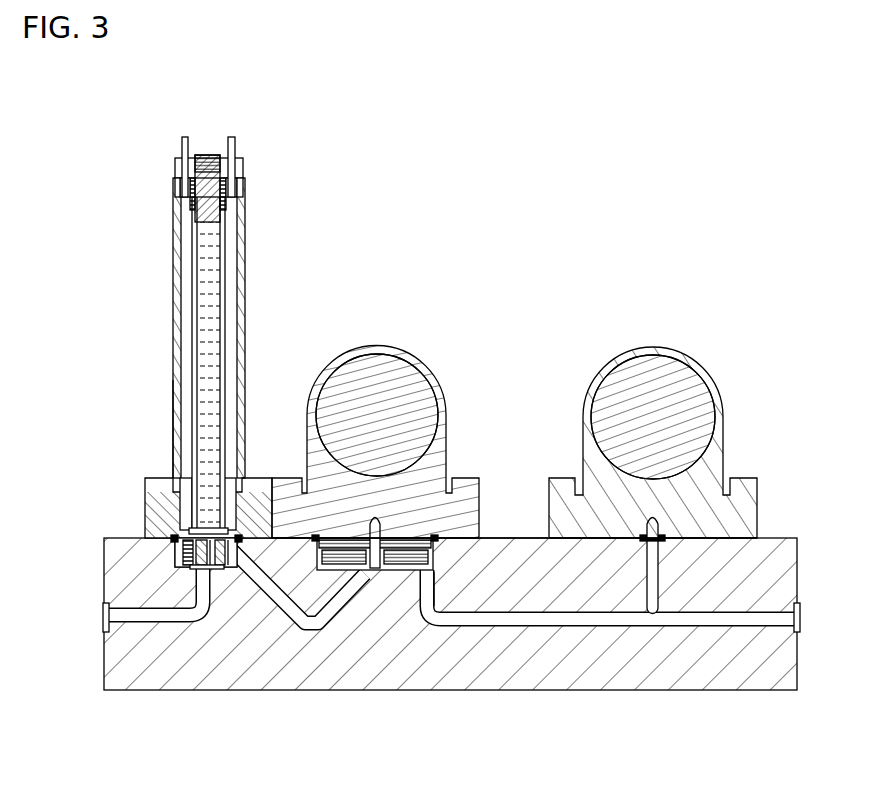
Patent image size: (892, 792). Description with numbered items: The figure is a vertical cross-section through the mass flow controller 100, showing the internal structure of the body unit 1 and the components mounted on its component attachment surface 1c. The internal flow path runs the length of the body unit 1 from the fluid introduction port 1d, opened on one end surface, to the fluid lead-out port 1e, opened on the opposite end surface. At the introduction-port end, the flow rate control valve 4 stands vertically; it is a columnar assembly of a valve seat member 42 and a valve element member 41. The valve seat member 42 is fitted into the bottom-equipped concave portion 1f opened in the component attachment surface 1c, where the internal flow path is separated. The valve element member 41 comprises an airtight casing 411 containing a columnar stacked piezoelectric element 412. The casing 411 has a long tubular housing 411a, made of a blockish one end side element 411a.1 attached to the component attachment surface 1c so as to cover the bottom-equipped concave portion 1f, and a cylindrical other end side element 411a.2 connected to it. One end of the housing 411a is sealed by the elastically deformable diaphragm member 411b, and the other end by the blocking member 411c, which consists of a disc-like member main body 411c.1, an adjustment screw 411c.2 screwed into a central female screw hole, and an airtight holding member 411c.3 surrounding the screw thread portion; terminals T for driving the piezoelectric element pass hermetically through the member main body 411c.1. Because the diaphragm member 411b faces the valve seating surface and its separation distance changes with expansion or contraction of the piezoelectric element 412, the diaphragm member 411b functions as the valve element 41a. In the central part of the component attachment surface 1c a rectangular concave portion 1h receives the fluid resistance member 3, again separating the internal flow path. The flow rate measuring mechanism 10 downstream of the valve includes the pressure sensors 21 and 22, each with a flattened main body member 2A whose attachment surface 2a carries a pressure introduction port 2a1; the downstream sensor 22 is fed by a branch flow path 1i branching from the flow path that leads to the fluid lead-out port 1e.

The mass flow controller 100 is at (498, 150).
The flow rate measuring mechanism 10 is at (548, 252).
The body unit 1 is at (463, 690).
The component attachment surface 1c is at (516, 538).
The fluid introduction port 1d is at (104, 617).
The fluid lead-out port 1e is at (800, 619).
The bottom-equipped concave portion 1f is at (177, 550).
The rectangular concave portion 1h is at (443, 587).
The branch flow path 1i is at (659, 578).
The attachment surface 2a is at (760, 550).
The main body member 2A is at (445, 390).
The pressure introduction port 2a1 is at (372, 530).
The fluid resistance member 3 is at (383, 574).
The flow rate control valve 4 is at (163, 106).
The valve element member 41 is at (273, 218).
The valve element 41a is at (143, 512).
The casing 411 is at (167, 298).
The housing 411a is at (93, 375).
The one end side element 411a.1 is at (152, 472).
The other end side element 411a.2 is at (172, 404).
The diaphragm member 411b is at (160, 494).
The blocking member 411c is at (95, 130).
The member main body 411c.1 is at (175, 165).
The adjustment screw 411c.2 is at (182, 150).
The airtight holding member 411c.3 is at (173, 185).
The stacked piezoelectric element 412 is at (222, 378).
The valve seat member 42 is at (166, 553).
The terminals T is at (236, 137).
The pressure sensor 21 is at (424, 350).
The pressure sensor 22 is at (714, 356).